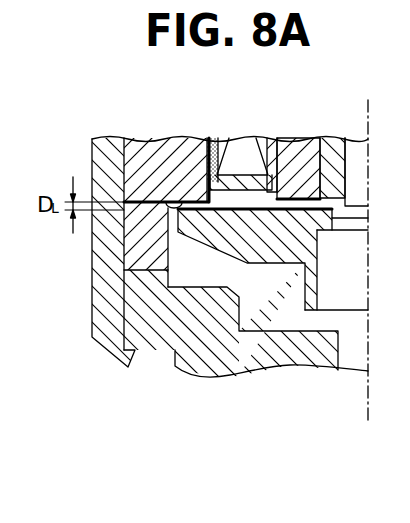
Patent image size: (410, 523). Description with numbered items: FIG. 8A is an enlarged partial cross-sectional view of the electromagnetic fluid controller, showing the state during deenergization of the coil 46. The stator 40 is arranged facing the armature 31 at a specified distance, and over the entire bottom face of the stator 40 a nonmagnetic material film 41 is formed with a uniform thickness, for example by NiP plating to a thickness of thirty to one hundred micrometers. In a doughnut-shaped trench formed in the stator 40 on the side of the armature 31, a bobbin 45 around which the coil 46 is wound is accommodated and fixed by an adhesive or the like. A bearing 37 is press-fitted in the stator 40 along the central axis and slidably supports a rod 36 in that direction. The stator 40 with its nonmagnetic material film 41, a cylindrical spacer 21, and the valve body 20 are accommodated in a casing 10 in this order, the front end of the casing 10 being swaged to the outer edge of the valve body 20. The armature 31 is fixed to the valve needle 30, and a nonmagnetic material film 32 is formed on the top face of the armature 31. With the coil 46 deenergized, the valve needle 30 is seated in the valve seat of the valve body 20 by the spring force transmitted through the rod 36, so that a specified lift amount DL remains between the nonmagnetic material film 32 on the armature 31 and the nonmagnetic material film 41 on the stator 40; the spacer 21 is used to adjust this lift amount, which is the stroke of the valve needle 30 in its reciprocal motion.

The casing 10 is at (95, 163).
The valve body 20 is at (148, 303).
The spacer 21 is at (197, 226).
The valve needle 30 is at (328, 300).
The armature 31 is at (278, 248).
The nonmagnetic material film 32 is at (133, 258).
The rod 36 is at (357, 155).
The bearing 37 is at (333, 148).
The stator 40 is at (177, 155).
The nonmagnetic material film 41 is at (172, 202).
The bobbin 45 is at (272, 140).
The coil 46 is at (235, 147).